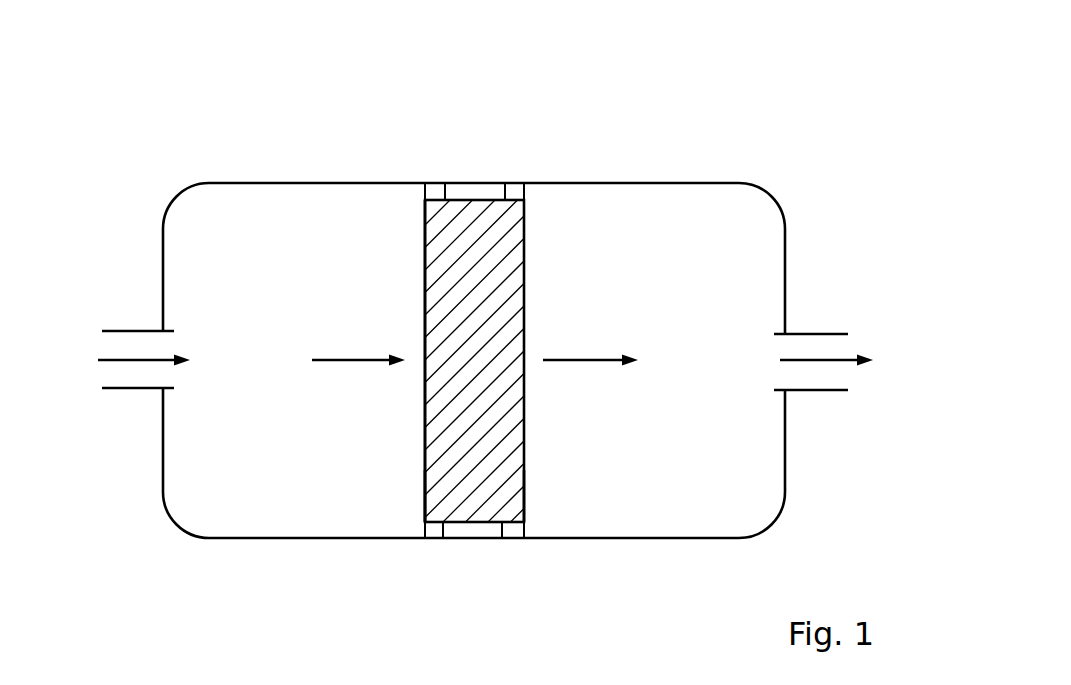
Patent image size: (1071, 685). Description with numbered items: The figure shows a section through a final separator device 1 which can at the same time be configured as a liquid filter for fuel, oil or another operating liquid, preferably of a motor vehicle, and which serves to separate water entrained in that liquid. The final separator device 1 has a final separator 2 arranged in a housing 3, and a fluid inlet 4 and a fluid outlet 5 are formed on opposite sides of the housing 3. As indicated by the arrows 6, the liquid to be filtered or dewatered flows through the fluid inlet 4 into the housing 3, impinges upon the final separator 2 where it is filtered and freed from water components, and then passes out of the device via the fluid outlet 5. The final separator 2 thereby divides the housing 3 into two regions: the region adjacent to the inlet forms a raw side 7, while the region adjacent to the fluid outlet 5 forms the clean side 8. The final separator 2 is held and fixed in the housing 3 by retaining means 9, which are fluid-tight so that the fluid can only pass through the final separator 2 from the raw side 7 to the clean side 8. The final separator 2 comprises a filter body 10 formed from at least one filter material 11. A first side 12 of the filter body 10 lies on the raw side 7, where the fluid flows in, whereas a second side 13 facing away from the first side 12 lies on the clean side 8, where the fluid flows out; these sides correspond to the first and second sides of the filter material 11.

The final separator device 1 is at (862, 170).
The final separator 2 is at (586, 333).
The housing 3 is at (280, 183).
The fluid inlet 4 is at (118, 377).
The fluid outlet 5 is at (830, 378).
The arrows 6 is at (136, 360).
The raw side 7 is at (260, 434).
The clean side 8 is at (656, 429).
The retaining means 9 is at (435, 190).
The filter body 10 is at (537, 257).
The filter material 11 is at (442, 230).
The first side 12 is at (424, 487).
The second side 13 is at (524, 487).